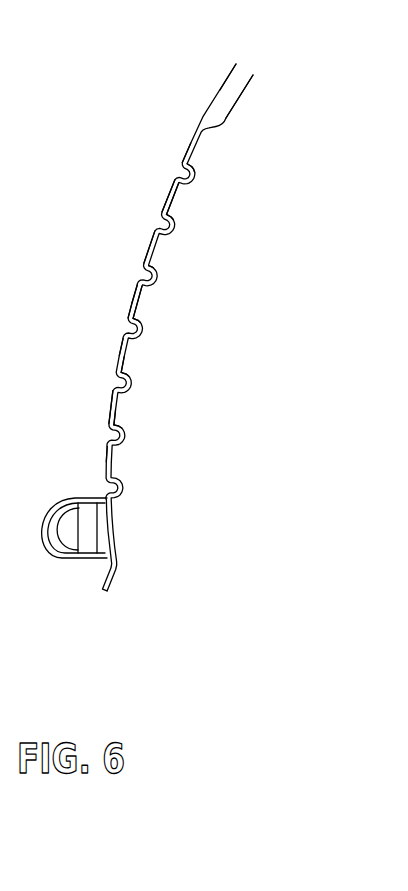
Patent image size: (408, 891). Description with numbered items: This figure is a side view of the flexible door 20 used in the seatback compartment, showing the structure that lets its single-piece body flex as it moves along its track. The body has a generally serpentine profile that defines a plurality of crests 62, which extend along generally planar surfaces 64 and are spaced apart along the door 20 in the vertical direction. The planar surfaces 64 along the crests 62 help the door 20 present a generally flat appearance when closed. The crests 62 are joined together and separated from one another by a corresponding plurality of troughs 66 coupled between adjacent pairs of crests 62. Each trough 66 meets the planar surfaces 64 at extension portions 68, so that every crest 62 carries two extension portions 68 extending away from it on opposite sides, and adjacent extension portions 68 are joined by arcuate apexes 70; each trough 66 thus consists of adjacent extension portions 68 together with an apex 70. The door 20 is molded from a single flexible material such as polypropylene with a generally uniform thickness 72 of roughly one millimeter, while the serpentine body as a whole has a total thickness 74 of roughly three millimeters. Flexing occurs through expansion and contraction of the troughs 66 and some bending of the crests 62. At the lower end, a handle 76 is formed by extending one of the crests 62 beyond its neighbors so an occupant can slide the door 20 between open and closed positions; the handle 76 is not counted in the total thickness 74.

The door 20 is at (202, 115).
The crests 62 is at (156, 203).
The generally planar surfaces 64 is at (160, 193).
The troughs 66 is at (167, 169).
The extension portions 68 is at (194, 164).
The arcuate apexes 70 is at (184, 184).
The uniform thickness 72 is at (246, 93).
The total thickness 74 is at (222, 110).
The handle 76 is at (52, 561).